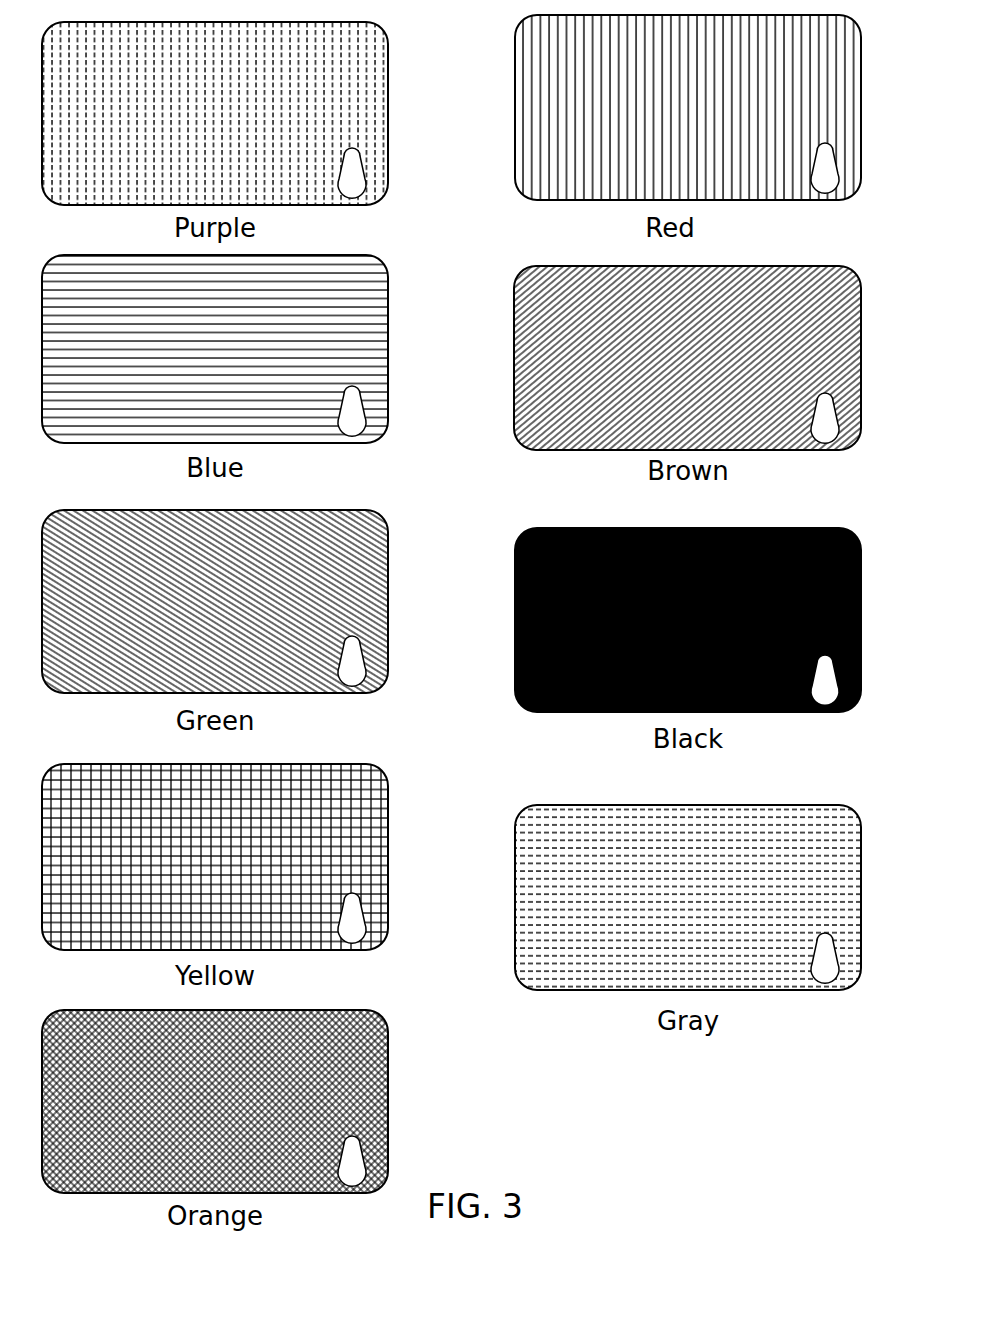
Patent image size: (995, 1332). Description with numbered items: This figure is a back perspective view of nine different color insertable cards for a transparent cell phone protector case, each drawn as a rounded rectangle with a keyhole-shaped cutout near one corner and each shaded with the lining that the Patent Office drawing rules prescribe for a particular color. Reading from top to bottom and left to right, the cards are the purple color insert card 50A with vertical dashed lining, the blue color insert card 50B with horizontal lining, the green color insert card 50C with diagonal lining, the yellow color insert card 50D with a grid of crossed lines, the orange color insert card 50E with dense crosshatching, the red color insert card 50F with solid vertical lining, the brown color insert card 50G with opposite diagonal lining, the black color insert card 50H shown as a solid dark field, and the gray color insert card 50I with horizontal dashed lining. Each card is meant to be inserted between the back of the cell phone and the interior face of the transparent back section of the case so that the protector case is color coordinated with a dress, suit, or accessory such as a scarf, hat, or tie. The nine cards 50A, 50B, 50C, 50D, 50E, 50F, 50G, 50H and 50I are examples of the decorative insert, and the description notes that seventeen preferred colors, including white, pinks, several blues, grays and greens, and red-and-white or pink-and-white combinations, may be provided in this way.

The purple color insert card 50A is at (388, 84).
The blue color insert card 50B is at (388, 324).
The green color insert card 50C is at (388, 565).
The yellow color insert card 50D is at (388, 800).
The orange color insert card 50E is at (373, 1073).
The red color insert card 50F is at (518, 152).
The brown color insert card 50G is at (522, 396).
The black color insert card 50H is at (516, 648).
The gray color insert card 50I is at (522, 930).